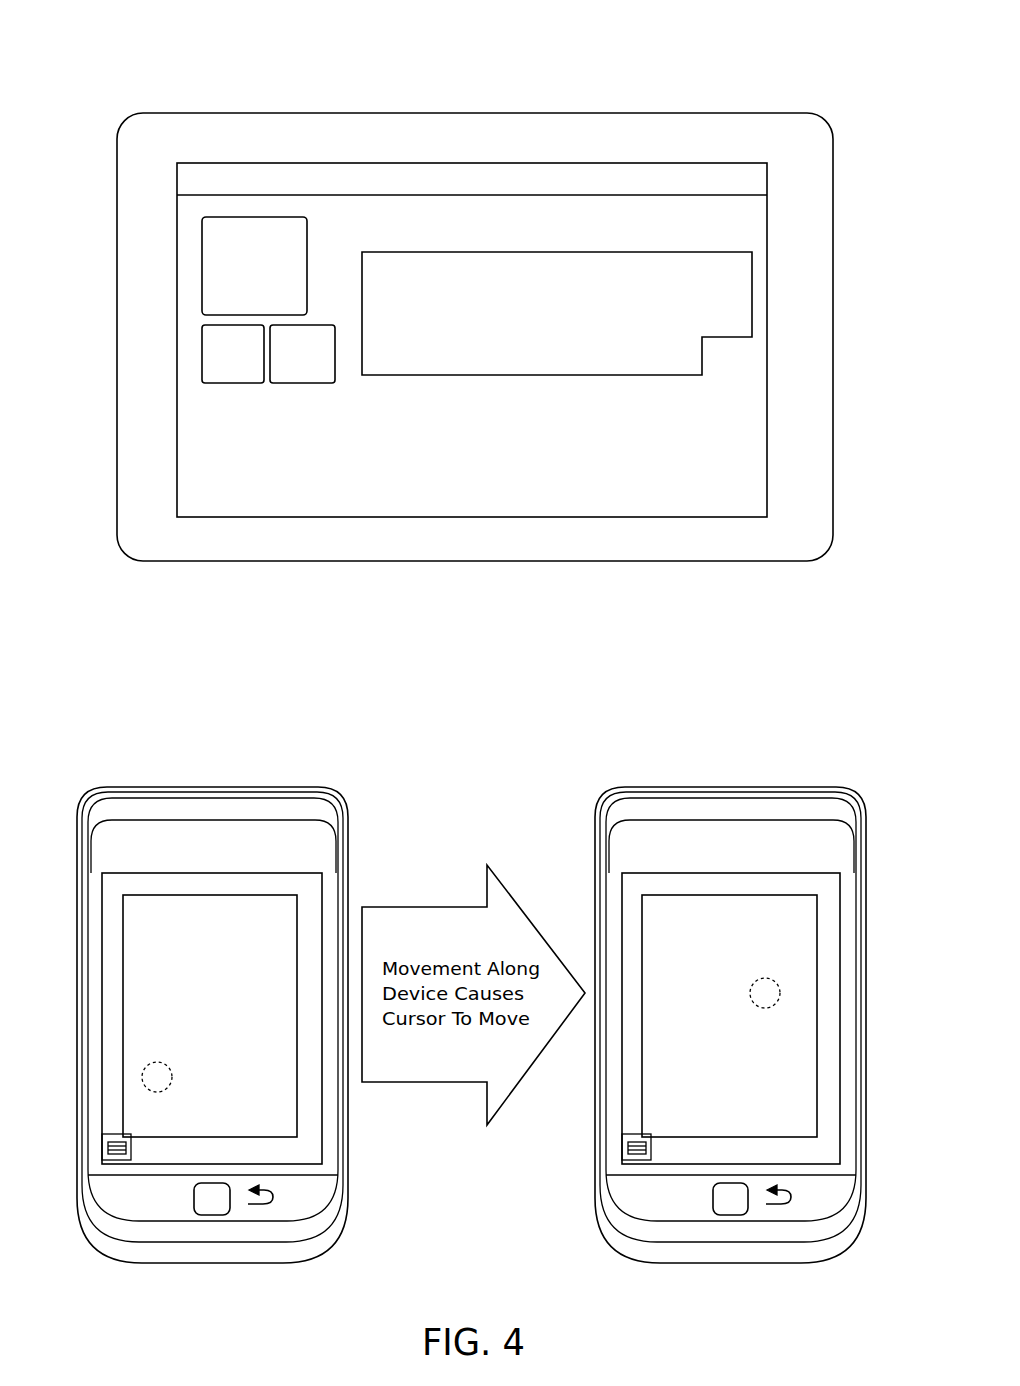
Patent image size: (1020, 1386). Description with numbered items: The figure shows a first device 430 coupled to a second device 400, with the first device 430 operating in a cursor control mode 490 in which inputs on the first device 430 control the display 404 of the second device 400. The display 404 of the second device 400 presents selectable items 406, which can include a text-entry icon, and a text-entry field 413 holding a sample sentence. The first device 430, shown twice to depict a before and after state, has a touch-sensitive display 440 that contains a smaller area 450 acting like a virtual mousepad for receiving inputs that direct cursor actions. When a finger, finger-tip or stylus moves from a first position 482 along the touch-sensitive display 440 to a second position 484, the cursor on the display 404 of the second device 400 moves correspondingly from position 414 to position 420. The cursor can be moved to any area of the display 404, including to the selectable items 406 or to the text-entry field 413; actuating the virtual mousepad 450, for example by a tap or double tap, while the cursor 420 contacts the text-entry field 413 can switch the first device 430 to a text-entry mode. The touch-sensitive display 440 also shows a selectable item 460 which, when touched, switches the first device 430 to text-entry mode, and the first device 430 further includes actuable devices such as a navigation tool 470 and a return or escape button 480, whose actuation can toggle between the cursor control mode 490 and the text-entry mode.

The second device 400 is at (257, 50).
The display 404 is at (749, 215).
The selectable items 406 is at (205, 245).
The text-entry field 413 is at (693, 358).
The cursor position 414 is at (388, 408).
The cursor position 420 is at (646, 236).
The first device 430 is at (209, 787).
The touch-sensitive display 440 is at (322, 873).
The virtual mousepad area 450 is at (290, 1104).
The selectable item 460 is at (120, 1158).
The navigation tool 470 is at (218, 1209).
The return or escape button 480 is at (263, 1207).
The first position 482 is at (143, 1087).
The second position 484 is at (749, 992).
The cursor control mode 490 is at (360, 766).